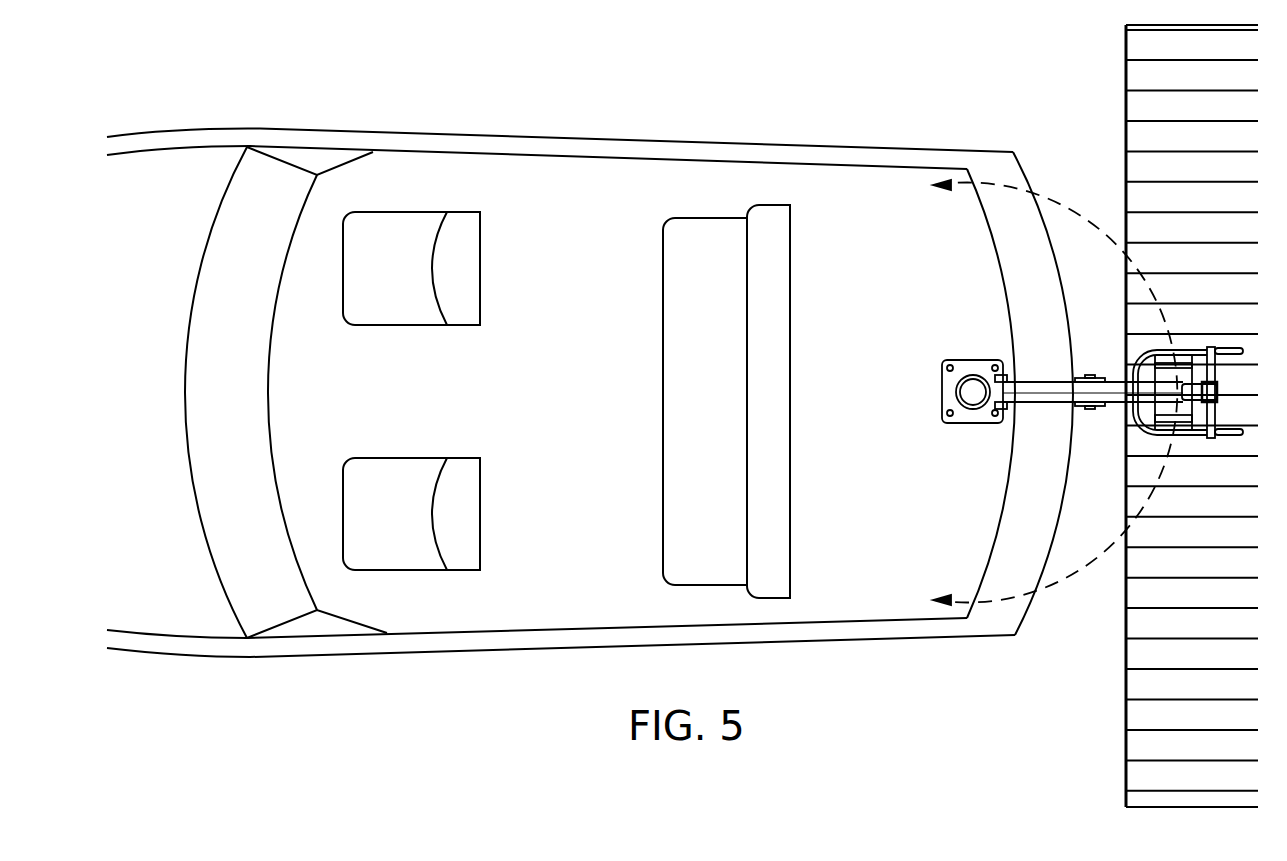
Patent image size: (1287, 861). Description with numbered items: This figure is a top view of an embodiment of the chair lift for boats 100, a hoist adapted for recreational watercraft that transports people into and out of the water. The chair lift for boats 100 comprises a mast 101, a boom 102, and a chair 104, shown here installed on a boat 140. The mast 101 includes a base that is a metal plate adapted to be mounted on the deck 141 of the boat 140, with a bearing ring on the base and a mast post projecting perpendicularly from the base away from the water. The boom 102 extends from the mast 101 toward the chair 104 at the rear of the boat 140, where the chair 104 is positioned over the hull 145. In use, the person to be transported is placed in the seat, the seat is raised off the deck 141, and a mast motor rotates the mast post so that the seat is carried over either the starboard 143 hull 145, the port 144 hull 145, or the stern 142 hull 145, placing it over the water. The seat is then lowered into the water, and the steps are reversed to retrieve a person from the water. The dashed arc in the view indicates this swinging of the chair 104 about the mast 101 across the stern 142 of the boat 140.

The chair lift for boats 100 is at (912, 313).
The mast 101 is at (963, 392).
The boom 102 is at (1065, 392).
The chair 104 is at (1177, 433).
The boat 140 is at (176, 173).
The deck 141 is at (577, 208).
The stern 142 is at (1032, 237).
The starboard 143 is at (815, 155).
The port 144 is at (830, 630).
The hull 145 is at (908, 158).